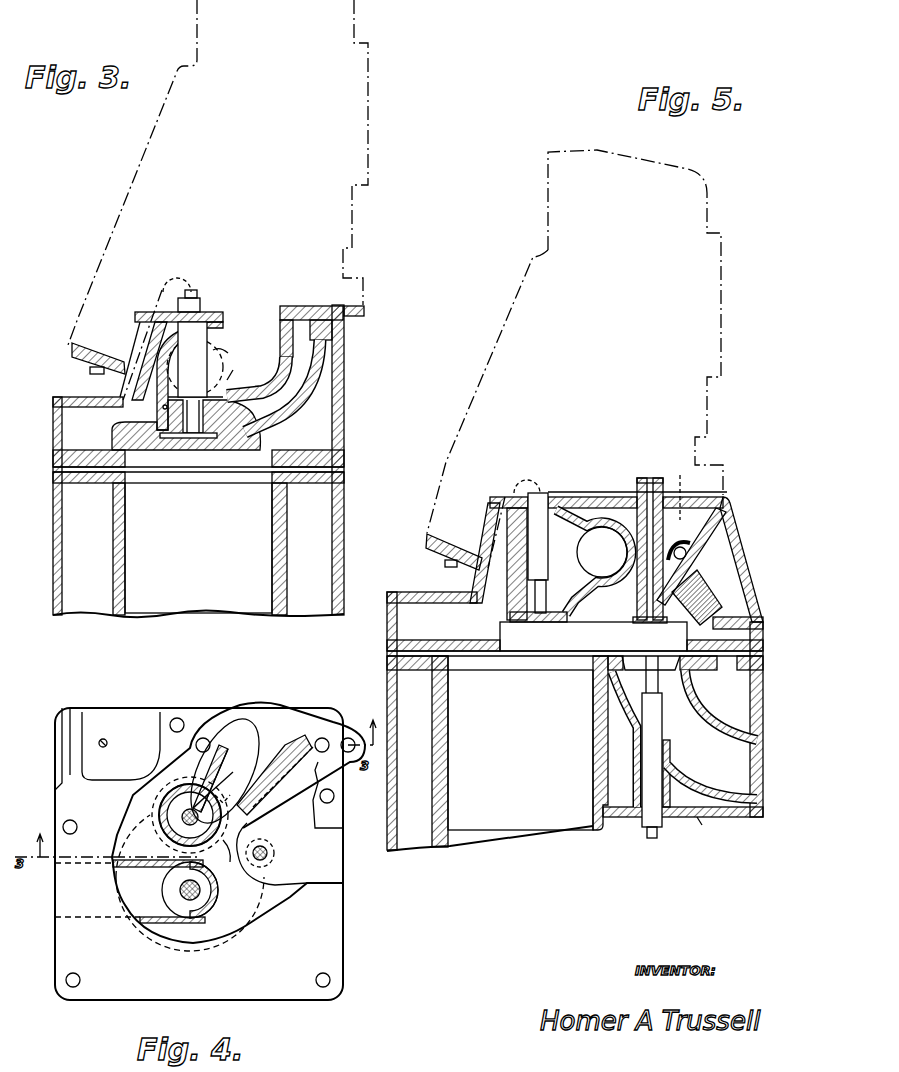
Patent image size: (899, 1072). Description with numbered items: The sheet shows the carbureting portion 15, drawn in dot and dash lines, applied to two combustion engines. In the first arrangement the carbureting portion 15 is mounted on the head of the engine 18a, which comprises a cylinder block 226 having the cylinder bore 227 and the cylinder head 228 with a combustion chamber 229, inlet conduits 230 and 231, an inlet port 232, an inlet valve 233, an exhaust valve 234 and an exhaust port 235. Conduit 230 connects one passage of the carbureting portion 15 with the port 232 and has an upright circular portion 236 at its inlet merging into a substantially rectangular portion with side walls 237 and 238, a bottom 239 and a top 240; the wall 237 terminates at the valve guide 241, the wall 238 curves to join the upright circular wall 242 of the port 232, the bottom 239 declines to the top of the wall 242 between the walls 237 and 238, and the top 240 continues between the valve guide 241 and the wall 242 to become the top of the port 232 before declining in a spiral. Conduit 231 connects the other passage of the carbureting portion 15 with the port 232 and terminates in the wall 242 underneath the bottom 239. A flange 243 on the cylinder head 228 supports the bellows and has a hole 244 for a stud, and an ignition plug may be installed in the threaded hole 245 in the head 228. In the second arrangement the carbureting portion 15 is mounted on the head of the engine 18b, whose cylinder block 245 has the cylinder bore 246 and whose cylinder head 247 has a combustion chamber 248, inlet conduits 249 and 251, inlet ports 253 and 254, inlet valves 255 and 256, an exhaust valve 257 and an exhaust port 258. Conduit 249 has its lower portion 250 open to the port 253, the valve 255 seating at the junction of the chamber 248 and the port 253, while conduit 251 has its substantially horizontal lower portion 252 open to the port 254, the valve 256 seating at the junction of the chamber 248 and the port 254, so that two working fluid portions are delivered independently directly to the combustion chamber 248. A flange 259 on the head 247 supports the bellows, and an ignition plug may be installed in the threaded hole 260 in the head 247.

In FIG. 3, the carbureting portion 15 is at (138, 170).
In FIG. 5, the carbureting portion 15 is at (490, 353).
In FIG. 3, the engine 18a is at (182, 465).
In FIG. 5, the engine 18b is at (589, 653).
In FIG. 3, the cylinder block 226 is at (344, 512).
In FIG. 3, the cylinder bore 227 is at (198, 548).
In FIG. 4, the cylinder bore 227 is at (240, 920).
In FIG. 3, the cylinder head 228 is at (344, 410).
In FIG. 4, the cylinder head 228 is at (352, 948).
In FIG. 3, the combustion chamber 229 is at (188, 447).
In FIG. 3, the inlet conduit 230 is at (256, 365).
In FIG. 4, the inlet conduit 230 is at (229, 777).
In FIG. 3, the inlet conduit 231 is at (273, 390).
In FIG. 4, the inlet conduit 231 is at (325, 737).
In FIG. 3, the inlet port 232 is at (207, 423).
In FIG. 4, the inlet port 232 is at (177, 803).
In FIG. 3, the inlet valve 233 is at (172, 433).
In FIG. 4, the inlet valve 233 is at (172, 817).
In FIG. 4, the exhaust valve 234 is at (207, 897).
In FIG. 4, the exhaust port 235 is at (159, 891).
In FIG. 3, the upright circular portion 236 is at (236, 312).
In FIG. 4, the upright circular portion 236 is at (225, 771).
In FIG. 3, the side wall 237 is at (236, 356).
In FIG. 4, the side wall 237 is at (223, 785).
In FIG. 4, the side wall 238 is at (222, 853).
In FIG. 3, the bottom 239 is at (242, 372).
In FIG. 4, the bottom 239 is at (227, 795).
In FIG. 3, the top 240 is at (175, 368).
In FIG. 3, the valve guide 241 is at (200, 300).
In FIG. 4, the valve guide 241 is at (156, 855).
In FIG. 3, the upright circular wall 242 is at (163, 407).
In FIG. 4, the upright circular wall 242 is at (160, 800).
In FIG. 3, the flange 243 is at (78, 357).
In FIG. 4, the flange 243 is at (115, 744).
In FIG. 4, the hole 244 is at (107, 743).
In FIG. 4, the threaded hole 245 is at (267, 853).
In FIG. 5, the threaded hole 245 is at (712, 826).
In FIG. 5, the cylinder bore 246 is at (520, 750).
In FIG. 5, the cylinder head 247 is at (387, 645).
In FIG. 5, the combustion chamber 248 is at (593, 636).
In FIG. 5, the inlet conduit 249 is at (595, 495).
In FIG. 5, the lower portion 250 is at (602, 552).
In FIG. 5, the inlet conduit 251 is at (665, 540).
In FIG. 5, the lower portion 252 is at (690, 557).
In FIG. 5, the inlet port 253 is at (569, 564).
In FIG. 5, the inlet port 254 is at (663, 573).
In FIG. 5, the inlet valve 255 is at (530, 622).
In FIG. 5, the inlet valve 256 is at (653, 620).
In FIG. 5, the exhaust valve 257 is at (637, 660).
In FIG. 5, the exhaust port 258 is at (684, 738).
In FIG. 5, the flange 259 is at (435, 550).
In FIG. 5, the threaded hole 260 is at (708, 600).